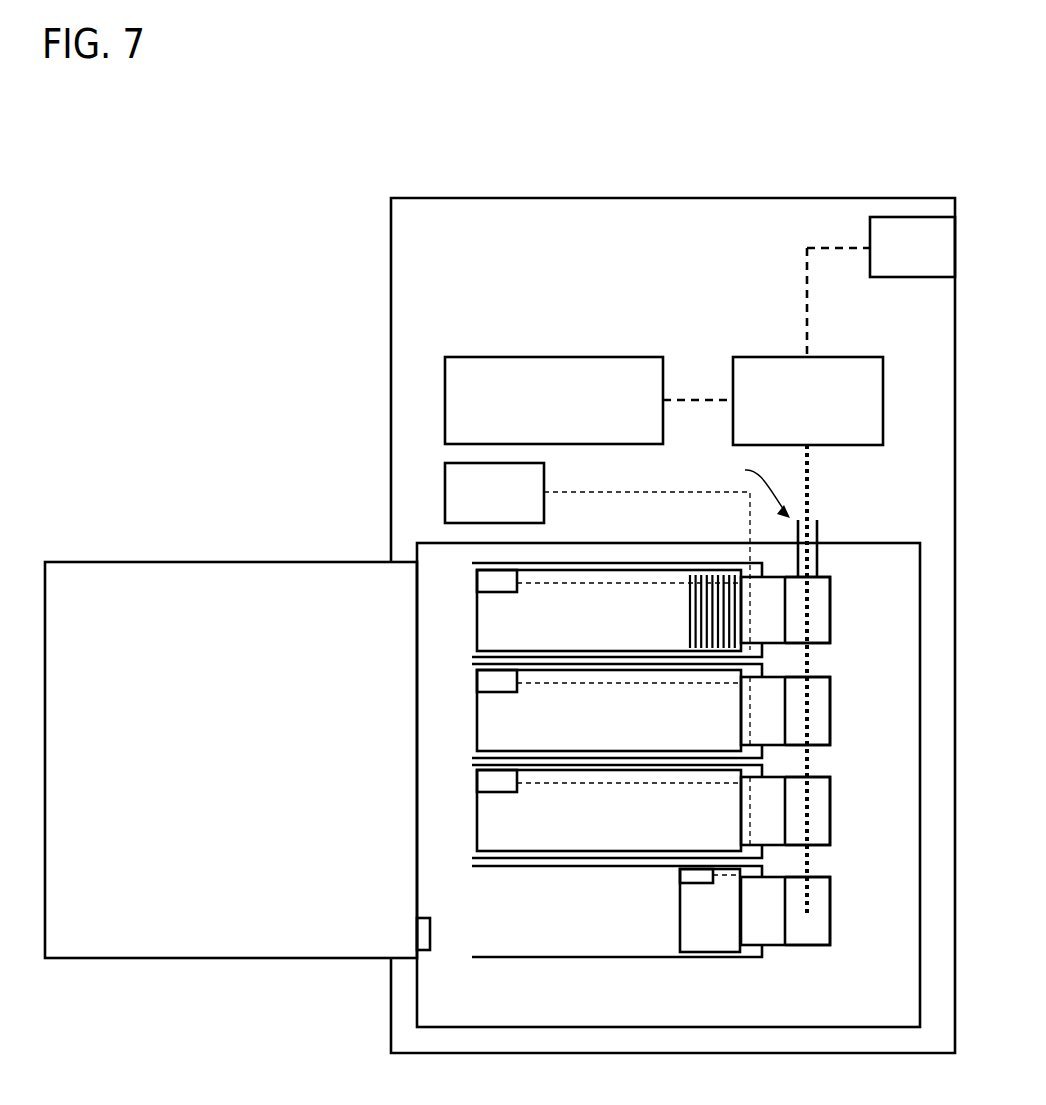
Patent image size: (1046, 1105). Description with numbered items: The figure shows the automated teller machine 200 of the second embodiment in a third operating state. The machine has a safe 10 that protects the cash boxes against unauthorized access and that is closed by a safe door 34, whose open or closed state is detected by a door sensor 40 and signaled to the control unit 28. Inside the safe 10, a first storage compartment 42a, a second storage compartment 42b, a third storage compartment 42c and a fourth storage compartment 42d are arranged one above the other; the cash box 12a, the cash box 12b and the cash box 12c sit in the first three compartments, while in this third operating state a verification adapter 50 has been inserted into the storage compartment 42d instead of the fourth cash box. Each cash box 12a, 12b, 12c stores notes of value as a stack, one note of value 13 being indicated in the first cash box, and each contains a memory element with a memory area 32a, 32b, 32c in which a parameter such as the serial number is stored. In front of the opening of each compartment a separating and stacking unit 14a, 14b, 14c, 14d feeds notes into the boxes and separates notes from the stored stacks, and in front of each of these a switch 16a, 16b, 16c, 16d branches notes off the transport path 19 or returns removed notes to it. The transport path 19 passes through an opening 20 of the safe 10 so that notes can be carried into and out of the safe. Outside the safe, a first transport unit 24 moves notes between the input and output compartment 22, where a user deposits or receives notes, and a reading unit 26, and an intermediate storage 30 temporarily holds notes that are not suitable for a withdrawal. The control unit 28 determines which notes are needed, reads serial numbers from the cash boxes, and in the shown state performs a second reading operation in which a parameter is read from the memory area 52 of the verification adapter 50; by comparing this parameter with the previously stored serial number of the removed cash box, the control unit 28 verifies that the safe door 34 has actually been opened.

The automated teller machine 200 is at (368, 178).
The input and output compartment 22 is at (870, 232).
The first transport unit 24 is at (807, 302).
The reading unit 26 is at (855, 375).
The intermediate storage 30 is at (452, 400).
The control unit 28 is at (452, 490).
The safe door 34 is at (218, 575).
The safe 10 is at (898, 542).
The door sensor 40 is at (430, 932).
The transport path 19 is at (818, 525).
The opening 20 is at (751, 487).
The note of value 13 is at (722, 570).
The first storage compartment 42a is at (642, 562).
The second storage compartment 42b is at (763, 667).
The third storage compartment 42c is at (763, 768).
The fourth storage compartment 42d is at (765, 870).
The cash box 12a is at (668, 635).
The cash box 12b is at (668, 735).
The cash box 12c is at (668, 835).
The memory area 32a is at (493, 583).
The memory area 32b is at (493, 683).
The memory area 32c is at (493, 783).
The separating and stacking unit 14a is at (776, 628).
The separating and stacking unit 14b is at (776, 728).
The separating and stacking unit 14c is at (776, 828).
The separating and stacking unit 14d is at (777, 927).
The switch 16a is at (822, 593).
The switch 16b is at (822, 693).
The switch 16c is at (822, 793).
The switch 16d is at (822, 893).
The verification adapter 50 is at (680, 925).
The memory area 52 is at (683, 876).